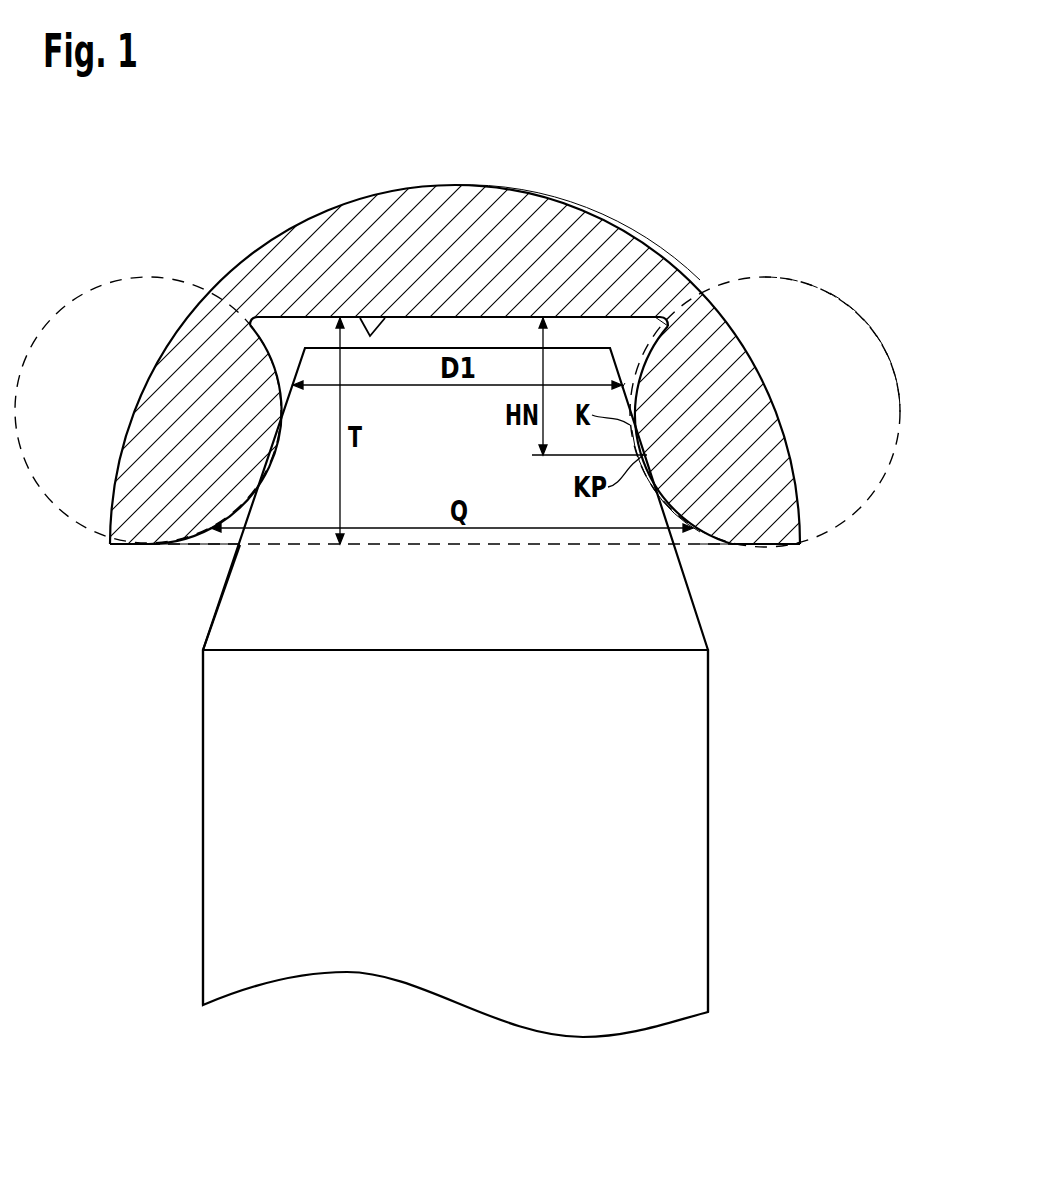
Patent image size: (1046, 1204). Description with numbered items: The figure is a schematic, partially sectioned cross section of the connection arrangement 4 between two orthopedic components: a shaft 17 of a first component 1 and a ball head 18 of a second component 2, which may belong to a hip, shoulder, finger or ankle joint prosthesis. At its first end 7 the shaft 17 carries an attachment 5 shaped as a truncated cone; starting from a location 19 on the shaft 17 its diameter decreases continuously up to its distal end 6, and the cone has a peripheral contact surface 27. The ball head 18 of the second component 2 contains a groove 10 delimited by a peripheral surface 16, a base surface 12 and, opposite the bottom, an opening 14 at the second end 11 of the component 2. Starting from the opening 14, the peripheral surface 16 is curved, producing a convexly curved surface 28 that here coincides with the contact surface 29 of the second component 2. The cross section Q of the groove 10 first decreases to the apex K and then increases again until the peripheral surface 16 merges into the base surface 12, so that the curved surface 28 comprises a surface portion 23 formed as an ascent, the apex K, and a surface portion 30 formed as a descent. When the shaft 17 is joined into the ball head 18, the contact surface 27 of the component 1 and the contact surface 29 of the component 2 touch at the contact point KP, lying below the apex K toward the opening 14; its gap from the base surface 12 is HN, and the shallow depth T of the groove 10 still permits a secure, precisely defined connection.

The first component 1 is at (172, 923).
The second component 2 is at (504, 268).
The connection arrangement 4 is at (800, 410).
The attachment 5 is at (463, 452).
The distal end 6 is at (425, 337).
The first end 7 is at (225, 568).
The groove 10 is at (633, 338).
The second end 11 is at (785, 570).
The base surface 12 is at (372, 318).
The opening 14 is at (226, 552).
The peripheral surface 16 is at (282, 352).
The shaft 17 is at (185, 778).
The ball head 18 is at (568, 182).
The location 19 is at (203, 650).
The surface portion 23 is at (638, 478).
The contact surface 27 is at (683, 510).
The curved surface 28 is at (814, 228).
The contact surface 29 is at (877, 158).
The surface portion 30 is at (625, 383).